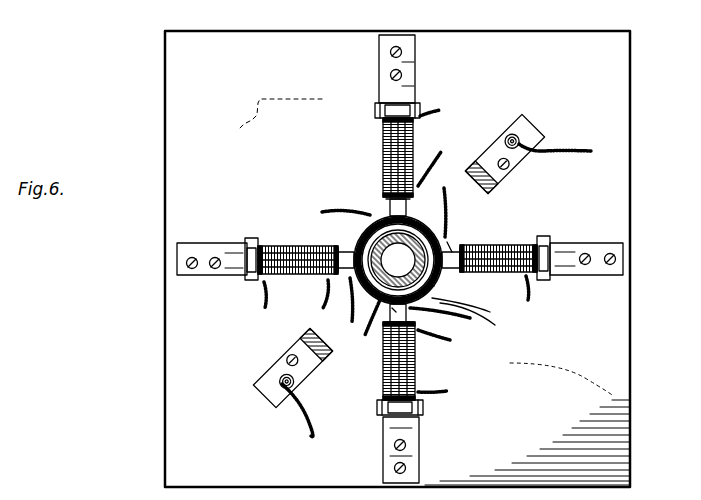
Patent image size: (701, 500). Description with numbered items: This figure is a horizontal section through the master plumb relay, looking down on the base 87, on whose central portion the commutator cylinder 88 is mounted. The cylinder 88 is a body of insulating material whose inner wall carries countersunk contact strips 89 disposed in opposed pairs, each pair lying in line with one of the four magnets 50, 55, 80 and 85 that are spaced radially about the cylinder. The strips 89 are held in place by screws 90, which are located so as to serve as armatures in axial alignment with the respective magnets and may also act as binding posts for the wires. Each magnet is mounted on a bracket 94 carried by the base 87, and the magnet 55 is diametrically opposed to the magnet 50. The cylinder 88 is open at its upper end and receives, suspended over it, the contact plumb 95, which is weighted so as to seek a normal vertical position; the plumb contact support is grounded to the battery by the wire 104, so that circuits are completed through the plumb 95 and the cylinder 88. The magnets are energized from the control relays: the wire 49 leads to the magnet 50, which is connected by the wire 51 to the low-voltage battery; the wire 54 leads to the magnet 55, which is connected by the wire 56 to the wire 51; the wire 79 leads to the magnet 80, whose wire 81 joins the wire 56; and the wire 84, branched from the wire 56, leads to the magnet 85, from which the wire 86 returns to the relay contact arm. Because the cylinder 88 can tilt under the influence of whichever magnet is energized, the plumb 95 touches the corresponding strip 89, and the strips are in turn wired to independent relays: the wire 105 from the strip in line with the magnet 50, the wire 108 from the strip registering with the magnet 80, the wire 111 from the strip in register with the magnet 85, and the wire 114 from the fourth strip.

The wire 49 is at (441, 152).
The magnet 50 is at (383, 153).
The wire 51 is at (440, 110).
The wire 54 is at (450, 340).
The second magnet 55 is at (383, 378).
The wire 56 is at (447, 391).
The wire 79 is at (532, 298).
The magnet 80 is at (510, 245).
The wire 81 is at (490, 312).
The wire 84 is at (326, 290).
The magnet 85 is at (284, 246).
The wire 86 is at (262, 296).
The base 87 is at (632, 374).
The commutator cylinder 88 is at (432, 283).
The contact strips 89 is at (366, 243).
The screws 90 is at (349, 306).
The brackets 94 is at (414, 84).
The contact plumb 95 is at (394, 310).
The wire 104 is at (586, 150).
The wire 105 is at (330, 212).
The wire 108 is at (447, 201).
The wire 111 is at (365, 335).
The wire 114 is at (495, 325).